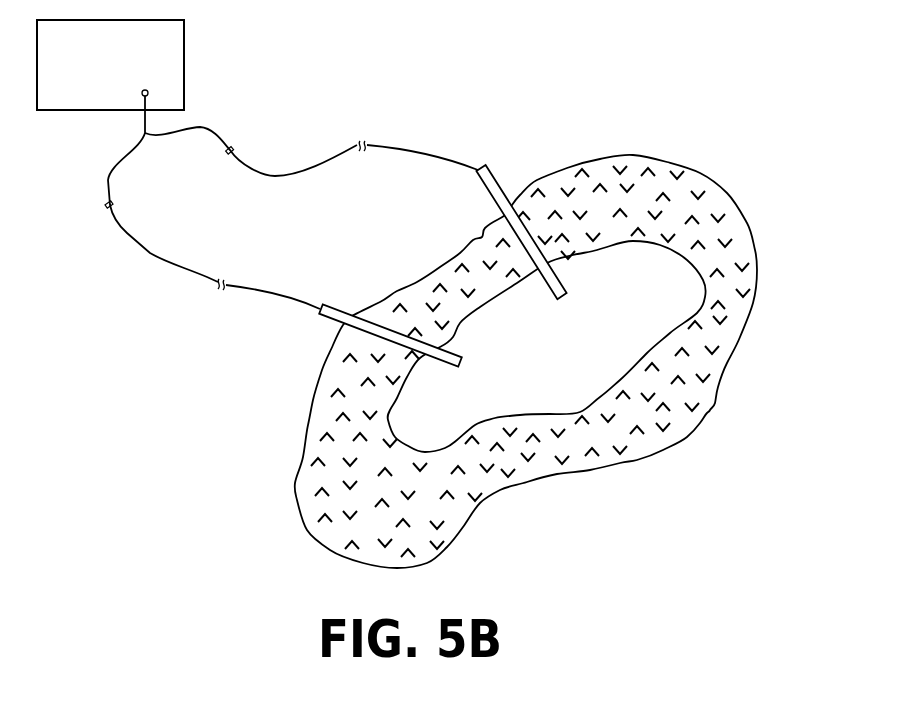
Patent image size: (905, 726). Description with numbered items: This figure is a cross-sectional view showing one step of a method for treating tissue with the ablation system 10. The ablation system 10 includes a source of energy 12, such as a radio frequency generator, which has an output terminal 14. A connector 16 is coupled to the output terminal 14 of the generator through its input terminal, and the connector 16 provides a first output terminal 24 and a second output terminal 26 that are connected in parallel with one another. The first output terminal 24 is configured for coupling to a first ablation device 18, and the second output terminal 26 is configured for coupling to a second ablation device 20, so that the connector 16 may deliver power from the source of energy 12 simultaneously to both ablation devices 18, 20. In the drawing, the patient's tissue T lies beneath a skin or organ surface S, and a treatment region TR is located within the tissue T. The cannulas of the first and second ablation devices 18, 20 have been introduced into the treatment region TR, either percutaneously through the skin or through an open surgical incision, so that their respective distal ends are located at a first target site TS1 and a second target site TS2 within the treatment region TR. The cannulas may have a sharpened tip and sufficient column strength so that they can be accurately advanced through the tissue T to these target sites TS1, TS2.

The ablation system 10 is at (386, 100).
The source of energy 12 is at (185, 32).
The output terminal 14 is at (142, 93).
The connector 16 is at (200, 127).
The first ablation device 18 is at (495, 177).
The second ablation device 20 is at (325, 325).
The first output terminal 24 is at (108, 205).
The second output terminal 26 is at (231, 151).
The organ surface S is at (717, 190).
The tissue T is at (673, 415).
The treatment region TR is at (547, 346).
The first target site TS1 is at (488, 361).
The second target site TS2 is at (584, 314).